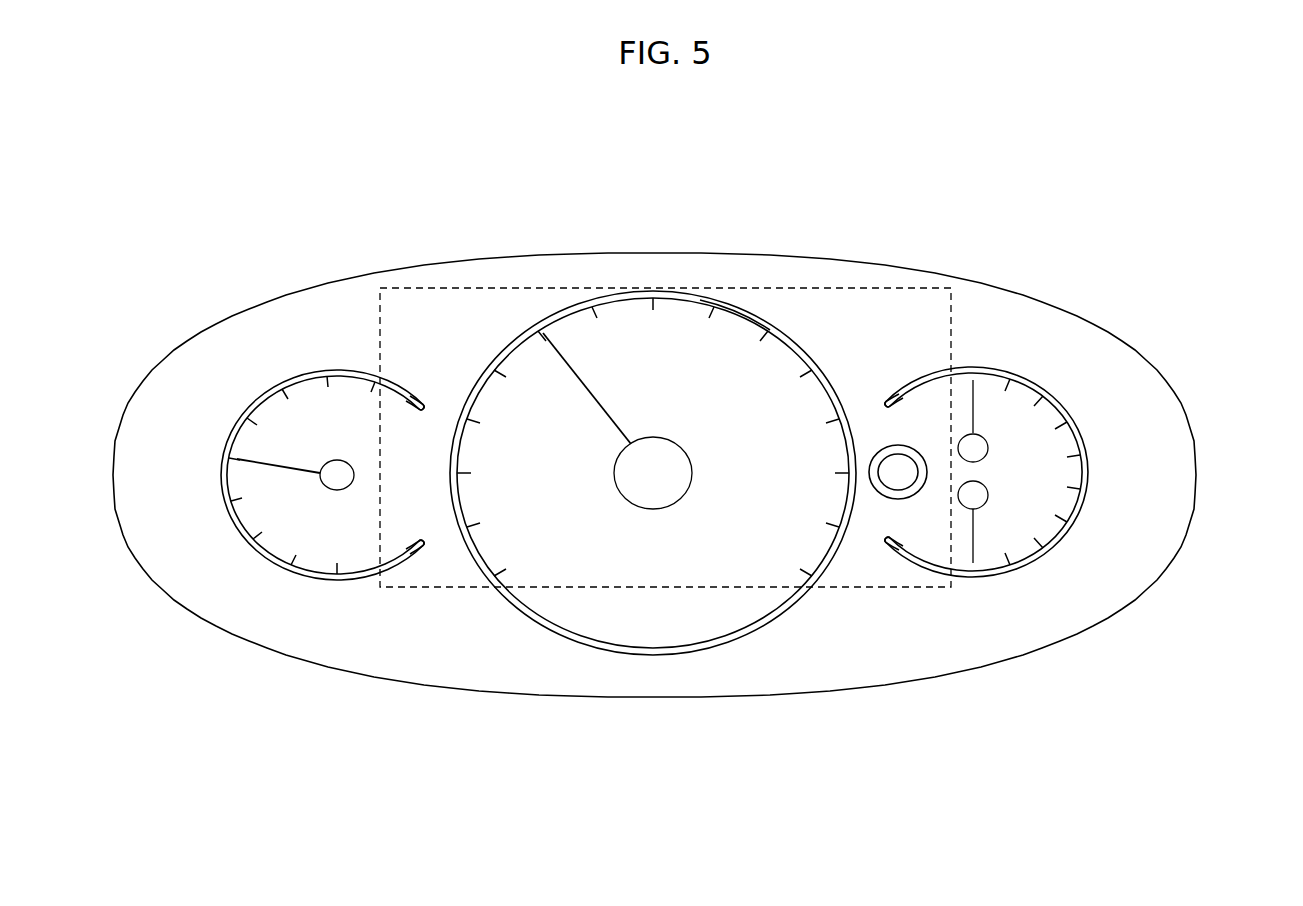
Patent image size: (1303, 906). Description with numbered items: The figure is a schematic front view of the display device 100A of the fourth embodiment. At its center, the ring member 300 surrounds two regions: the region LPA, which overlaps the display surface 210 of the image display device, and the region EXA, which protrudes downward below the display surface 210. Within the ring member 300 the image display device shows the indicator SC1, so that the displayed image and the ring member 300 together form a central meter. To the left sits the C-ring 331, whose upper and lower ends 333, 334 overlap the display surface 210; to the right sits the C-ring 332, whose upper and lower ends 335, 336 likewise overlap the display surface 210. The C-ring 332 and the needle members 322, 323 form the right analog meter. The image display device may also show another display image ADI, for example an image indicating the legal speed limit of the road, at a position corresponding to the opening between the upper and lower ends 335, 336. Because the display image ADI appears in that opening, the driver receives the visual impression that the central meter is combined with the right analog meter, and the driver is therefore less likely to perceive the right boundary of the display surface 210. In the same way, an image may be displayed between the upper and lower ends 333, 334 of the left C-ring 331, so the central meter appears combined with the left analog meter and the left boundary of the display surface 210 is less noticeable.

The display device 100A is at (1104, 271).
The display surface 210 is at (852, 560).
The ring member 300 is at (740, 640).
The needle member 322 is at (973, 380).
The needle member 323 is at (973, 546).
The C-ring 331 is at (243, 537).
The C-ring 332 is at (1082, 505).
The upper end 333 is at (420, 400).
The lower end 334 is at (420, 548).
The upper end 335 is at (892, 403).
The lower end 336 is at (892, 541).
The indicator SC1 is at (613, 320).
The region LPA is at (723, 372).
The display image ADI is at (880, 446).
The region EXA is at (647, 622).